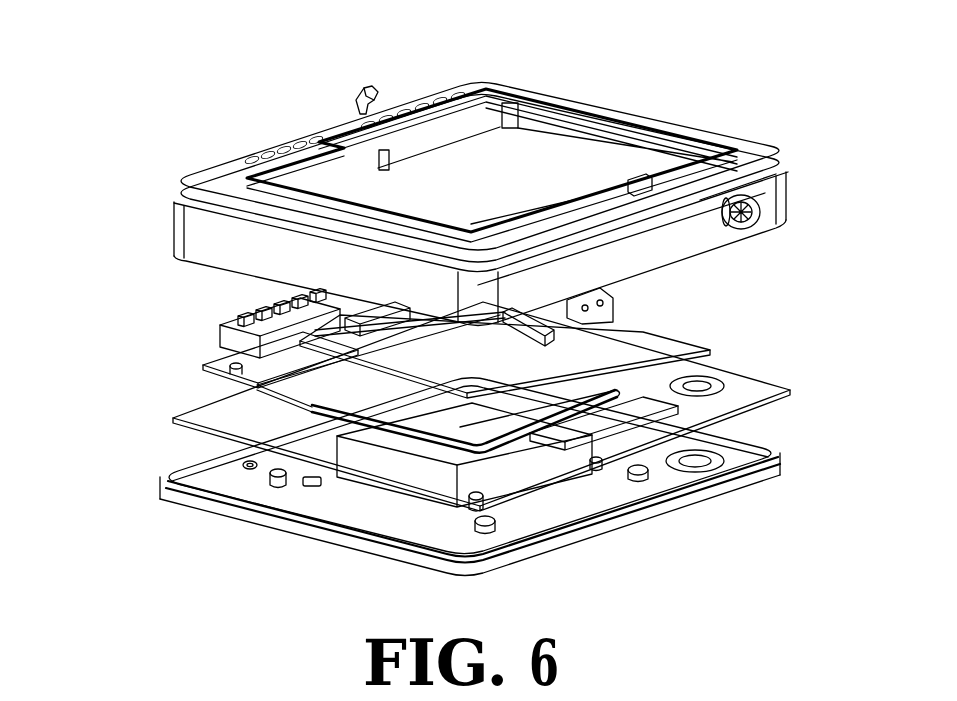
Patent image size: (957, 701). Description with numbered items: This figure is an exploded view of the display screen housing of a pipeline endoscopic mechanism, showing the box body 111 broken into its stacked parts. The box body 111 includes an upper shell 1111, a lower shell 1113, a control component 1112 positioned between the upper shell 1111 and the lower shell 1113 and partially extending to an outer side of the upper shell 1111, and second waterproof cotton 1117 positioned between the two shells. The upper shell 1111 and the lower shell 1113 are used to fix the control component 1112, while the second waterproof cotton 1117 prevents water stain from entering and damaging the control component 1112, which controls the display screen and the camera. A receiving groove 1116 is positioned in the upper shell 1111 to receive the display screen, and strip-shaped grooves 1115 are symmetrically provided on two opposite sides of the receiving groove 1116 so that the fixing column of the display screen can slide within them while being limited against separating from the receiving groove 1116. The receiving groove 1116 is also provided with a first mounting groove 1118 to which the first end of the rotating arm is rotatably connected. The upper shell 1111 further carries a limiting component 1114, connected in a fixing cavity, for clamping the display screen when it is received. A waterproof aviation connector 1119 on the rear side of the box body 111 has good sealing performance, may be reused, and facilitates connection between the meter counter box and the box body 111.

The box body 111 is at (182, 25).
The upper shell 1111 is at (450, 92).
The control component 1112 is at (250, 305).
The lower shell 1113 is at (760, 448).
The limiting component 1114 is at (358, 92).
The strip-shaped groove 1115 is at (543, 177).
The receiving groove 1116 is at (605, 112).
The second waterproof cotton 1117 is at (173, 418).
The first mounting groove 1118 is at (745, 160).
The waterproof aviation connector 1119 is at (760, 220).